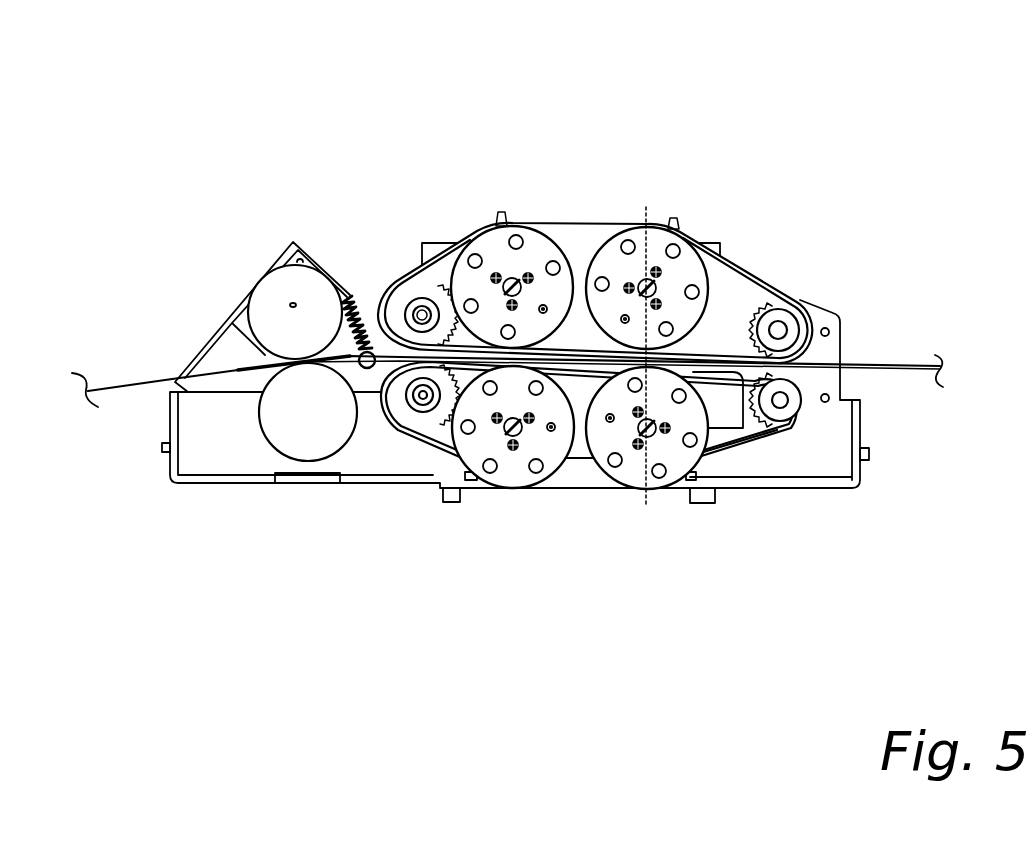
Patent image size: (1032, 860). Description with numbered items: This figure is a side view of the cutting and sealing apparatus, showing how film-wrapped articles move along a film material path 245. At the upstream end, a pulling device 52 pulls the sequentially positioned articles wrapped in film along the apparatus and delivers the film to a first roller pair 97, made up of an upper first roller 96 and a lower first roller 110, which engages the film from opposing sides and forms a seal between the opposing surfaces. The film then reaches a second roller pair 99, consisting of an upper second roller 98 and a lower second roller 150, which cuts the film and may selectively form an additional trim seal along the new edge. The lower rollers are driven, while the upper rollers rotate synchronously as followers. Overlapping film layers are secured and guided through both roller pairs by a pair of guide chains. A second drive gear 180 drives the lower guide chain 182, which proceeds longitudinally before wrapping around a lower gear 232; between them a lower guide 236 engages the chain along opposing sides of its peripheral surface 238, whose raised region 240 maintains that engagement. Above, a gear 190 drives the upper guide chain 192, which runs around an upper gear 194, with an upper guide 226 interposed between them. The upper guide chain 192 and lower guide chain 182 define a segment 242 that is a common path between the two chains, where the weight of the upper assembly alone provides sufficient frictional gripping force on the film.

The pulling device 52 is at (355, 515).
The upper first roller 96 is at (573, 307).
The first roller pair 97 is at (567, 545).
The upper second roller 98 is at (597, 272).
The second roller pair 99 is at (700, 550).
The lower first roller 110 is at (457, 455).
The lower second roller 150 is at (700, 460).
The second drive gear 180 is at (750, 405).
The lower guide chain 182 is at (775, 432).
The gear 190 is at (765, 302).
The upper guide chain 192 is at (752, 310).
The upper gear 194 is at (405, 297).
The upper guide 226 is at (720, 287).
The lower gear 232 is at (430, 417).
The lower guide 236 is at (727, 425).
The peripheral surface 238 is at (710, 450).
The raised region 240 is at (747, 410).
The segment 242 is at (580, 360).
The film material path 245 is at (123, 390).